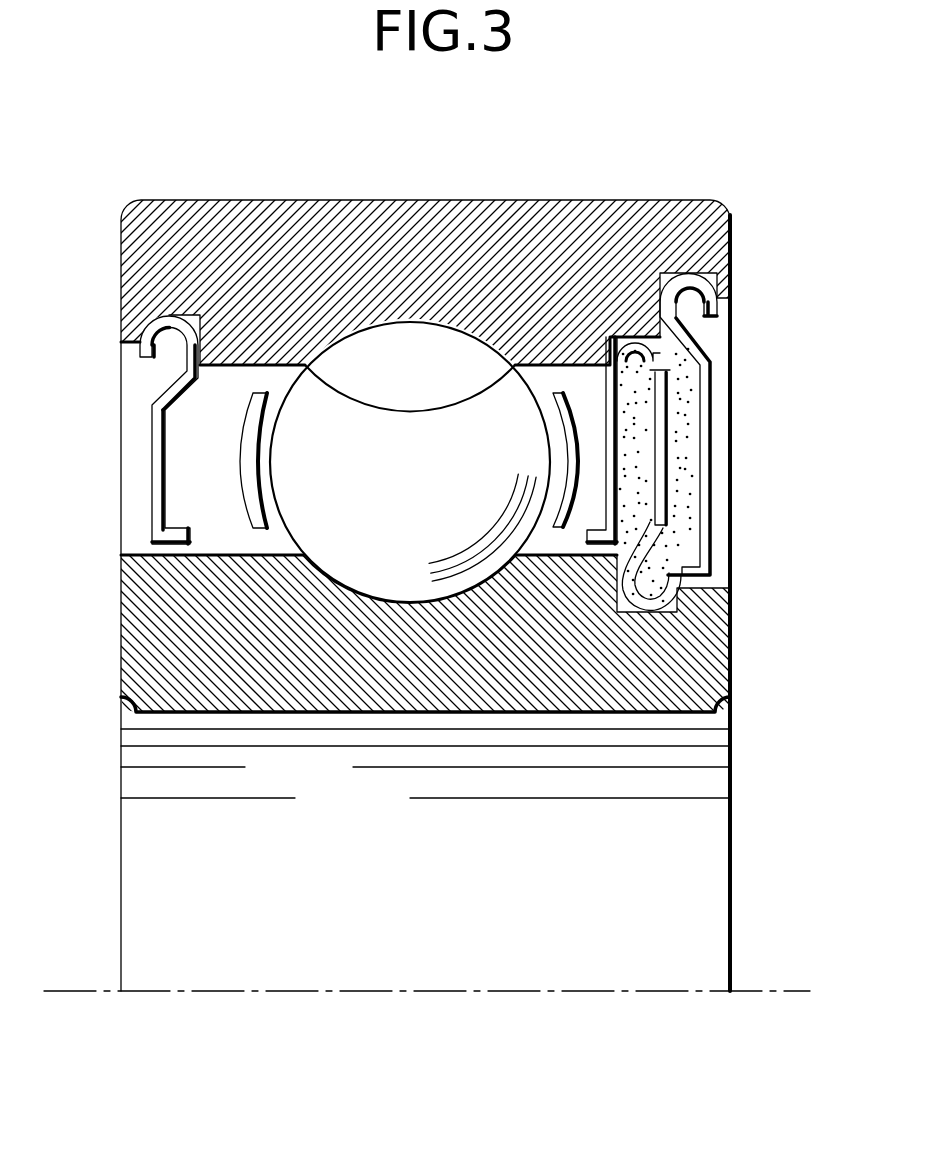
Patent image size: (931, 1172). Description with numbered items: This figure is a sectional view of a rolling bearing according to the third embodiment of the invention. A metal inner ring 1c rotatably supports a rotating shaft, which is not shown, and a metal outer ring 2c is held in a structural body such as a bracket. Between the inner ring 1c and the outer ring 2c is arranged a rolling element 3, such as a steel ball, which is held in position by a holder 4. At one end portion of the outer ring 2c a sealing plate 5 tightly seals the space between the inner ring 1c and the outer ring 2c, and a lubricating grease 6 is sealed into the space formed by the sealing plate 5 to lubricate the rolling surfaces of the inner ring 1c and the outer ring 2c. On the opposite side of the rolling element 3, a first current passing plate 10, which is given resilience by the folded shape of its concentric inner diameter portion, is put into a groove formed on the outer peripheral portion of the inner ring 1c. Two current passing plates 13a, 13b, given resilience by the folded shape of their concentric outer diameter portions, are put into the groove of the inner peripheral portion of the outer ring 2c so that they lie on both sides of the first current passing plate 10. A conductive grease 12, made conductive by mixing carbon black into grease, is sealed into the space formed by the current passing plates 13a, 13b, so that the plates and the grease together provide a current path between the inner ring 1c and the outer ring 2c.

The metal inner ring 1c is at (732, 642).
The metal outer ring 2c is at (597, 200).
The rolling element 3 is at (410, 322).
The holder 4 is at (248, 507).
The sealing plate 5 is at (133, 430).
The lubricating grease 6 is at (183, 427).
The first current passing plate 10 is at (662, 507).
The conductive grease 12 is at (690, 462).
The current passing plate 13a is at (612, 398).
The current passing plate 13b is at (677, 332).